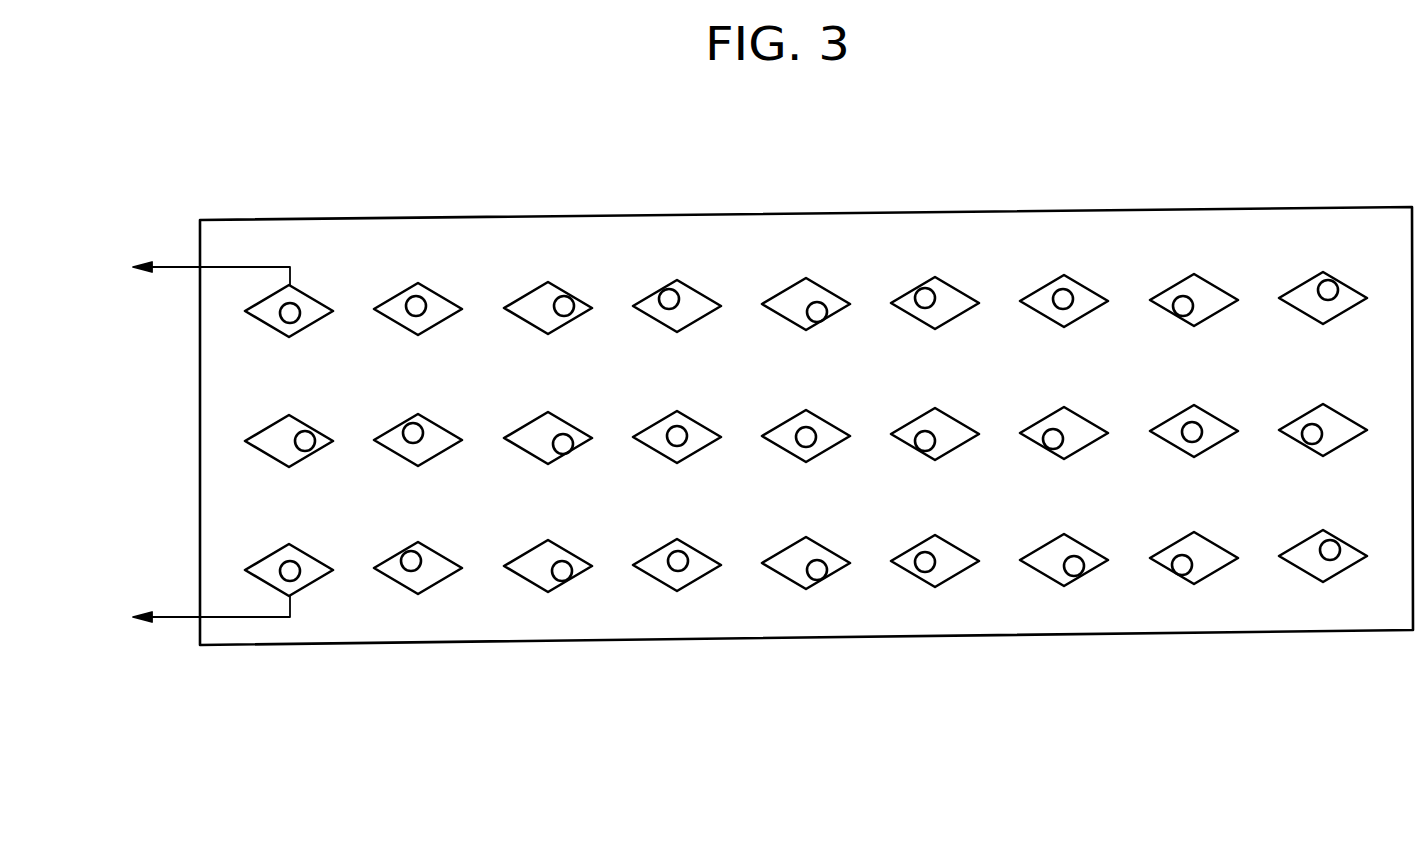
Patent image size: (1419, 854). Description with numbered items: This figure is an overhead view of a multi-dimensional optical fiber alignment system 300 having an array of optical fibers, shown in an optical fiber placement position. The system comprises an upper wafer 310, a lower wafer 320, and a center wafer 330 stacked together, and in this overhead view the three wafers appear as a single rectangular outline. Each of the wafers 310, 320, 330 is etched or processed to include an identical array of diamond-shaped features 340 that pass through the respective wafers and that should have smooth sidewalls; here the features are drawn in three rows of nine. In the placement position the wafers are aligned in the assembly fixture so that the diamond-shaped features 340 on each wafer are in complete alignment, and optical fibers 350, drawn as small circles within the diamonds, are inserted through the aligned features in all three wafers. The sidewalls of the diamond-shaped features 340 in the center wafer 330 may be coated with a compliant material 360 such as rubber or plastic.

The substrate sheet 300 is at (741, 186).
The upper wafer 310 is at (736, 638).
The lower wafer 320 is at (806, 561).
The center wafer 330 is at (753, 621).
The diamond-shaped features 340 is at (272, 315).
The optical fibers 350 is at (296, 575).
The compliant material 360 is at (255, 615).